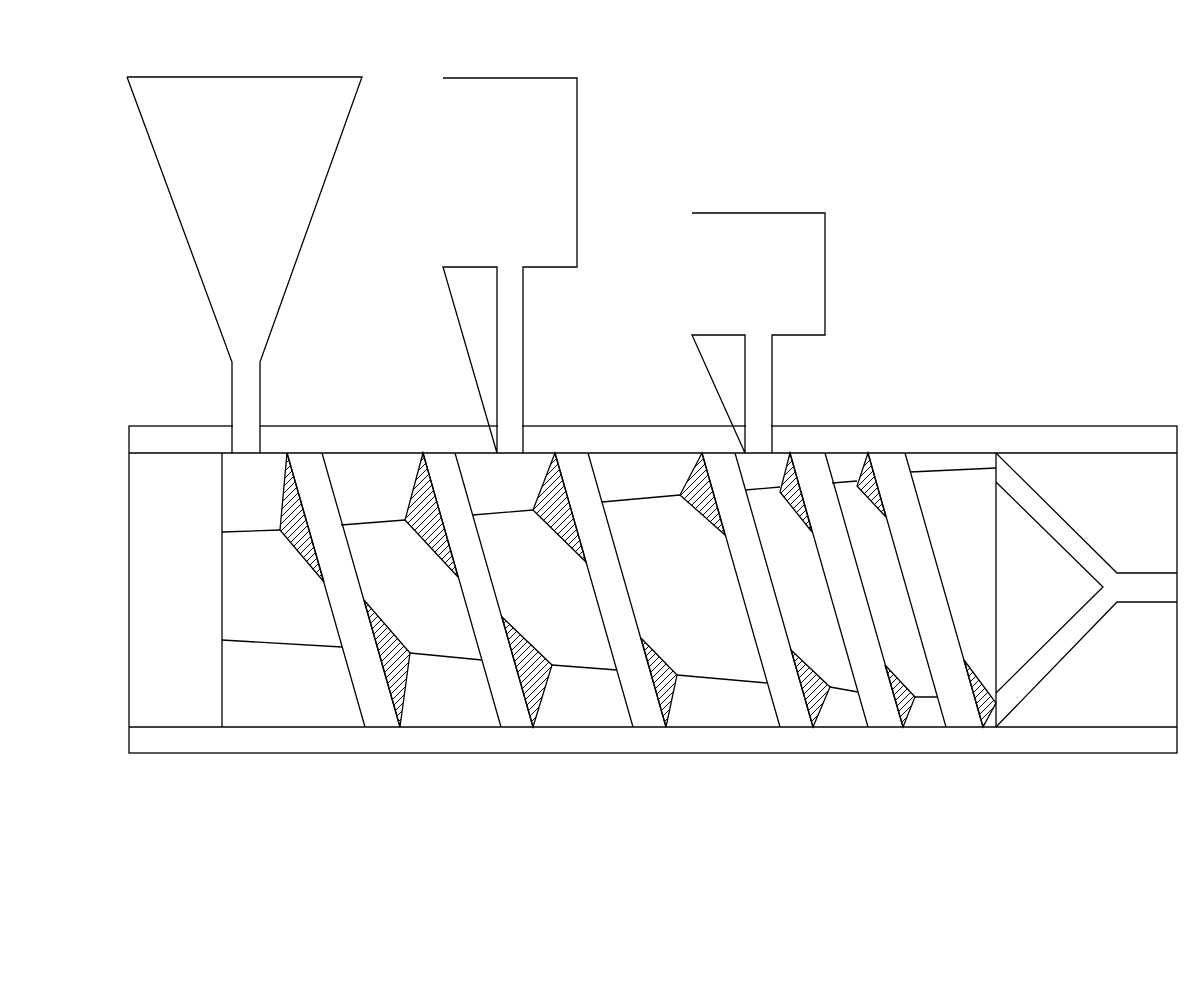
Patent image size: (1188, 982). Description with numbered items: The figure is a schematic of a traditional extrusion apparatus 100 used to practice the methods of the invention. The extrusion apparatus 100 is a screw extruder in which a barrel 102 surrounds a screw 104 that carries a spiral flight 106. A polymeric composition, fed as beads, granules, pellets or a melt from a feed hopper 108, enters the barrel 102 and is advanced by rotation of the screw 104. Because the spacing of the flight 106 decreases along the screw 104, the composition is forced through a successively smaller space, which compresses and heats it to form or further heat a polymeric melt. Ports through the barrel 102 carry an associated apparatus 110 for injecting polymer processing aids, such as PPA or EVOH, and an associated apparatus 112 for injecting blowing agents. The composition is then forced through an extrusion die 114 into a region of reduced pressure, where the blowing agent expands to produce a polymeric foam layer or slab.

The extrusion apparatus 100 is at (1100, 128).
The barrel 102 is at (288, 426).
The screw 104 is at (609, 548).
The spiral flight 106 is at (470, 483).
The feed hopper 108 is at (293, 108).
The apparatus for injecting polymer processing aids 110 is at (556, 181).
The apparatus for injecting blowing agents 112 is at (768, 233).
The extrusion die 114 is at (1085, 480).